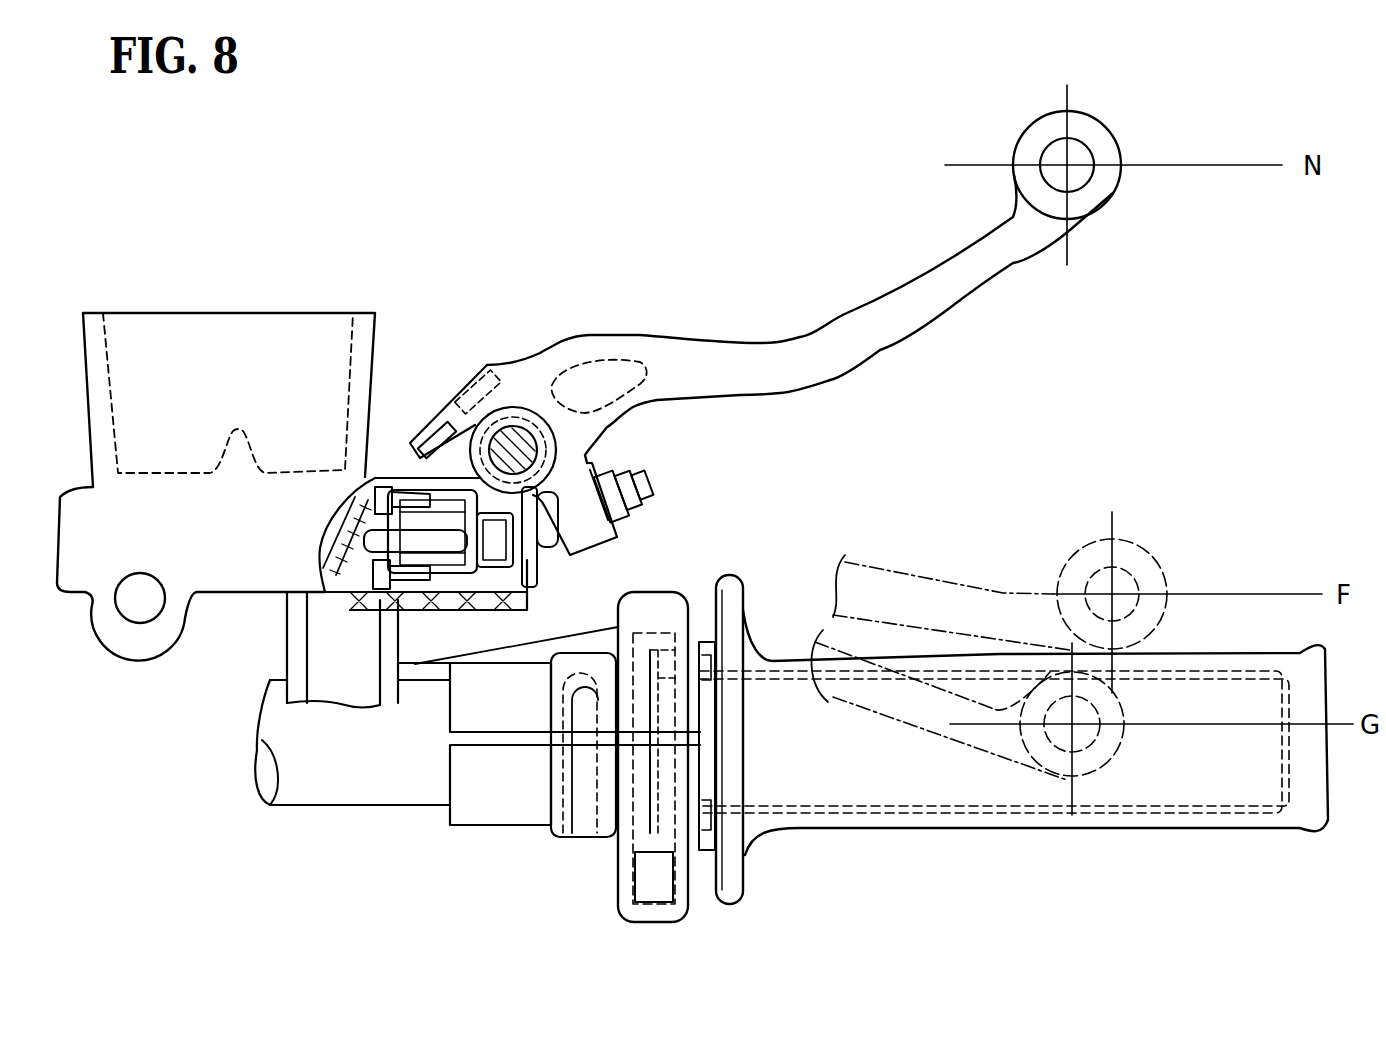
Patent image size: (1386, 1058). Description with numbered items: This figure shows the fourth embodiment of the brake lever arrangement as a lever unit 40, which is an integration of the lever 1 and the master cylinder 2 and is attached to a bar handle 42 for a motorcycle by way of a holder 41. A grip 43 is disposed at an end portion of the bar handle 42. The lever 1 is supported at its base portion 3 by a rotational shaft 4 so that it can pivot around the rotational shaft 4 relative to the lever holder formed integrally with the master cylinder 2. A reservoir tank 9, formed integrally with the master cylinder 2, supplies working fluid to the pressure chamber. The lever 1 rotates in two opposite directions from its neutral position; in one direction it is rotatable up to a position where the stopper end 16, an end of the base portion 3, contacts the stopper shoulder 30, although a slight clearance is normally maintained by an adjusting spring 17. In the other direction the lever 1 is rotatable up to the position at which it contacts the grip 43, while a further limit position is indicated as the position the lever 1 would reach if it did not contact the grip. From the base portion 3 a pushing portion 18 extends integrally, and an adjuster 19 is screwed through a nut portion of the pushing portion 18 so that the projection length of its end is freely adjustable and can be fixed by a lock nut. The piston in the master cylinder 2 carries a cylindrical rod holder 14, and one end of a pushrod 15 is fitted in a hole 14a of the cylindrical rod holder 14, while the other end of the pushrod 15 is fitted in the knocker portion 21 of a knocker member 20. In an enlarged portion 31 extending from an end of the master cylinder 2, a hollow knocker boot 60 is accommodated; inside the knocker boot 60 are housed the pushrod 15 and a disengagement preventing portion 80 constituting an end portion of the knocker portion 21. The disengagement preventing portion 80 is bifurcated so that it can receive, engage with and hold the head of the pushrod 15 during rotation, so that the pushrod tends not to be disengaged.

The lever 1 is at (915, 295).
The master cylinder 2 is at (232, 575).
The base portion 3 is at (520, 420).
The rotational shaft 4 is at (512, 425).
The reservoir tank 9 is at (100, 393).
The cylindrical rod holder 14 is at (440, 608).
The hole 14a is at (368, 650).
The pushrod 15 is at (358, 493).
The stopper end 16 is at (482, 390).
The adjusting spring 17 is at (457, 377).
The pushing portion 18 is at (603, 537).
The adjuster 19 is at (655, 480).
The knocker member 20 is at (550, 548).
The knocker portion 21 is at (540, 565).
The stopper shoulder 30 is at (443, 410).
The enlarged portion 31 is at (470, 600).
The lever unit 40 is at (131, 658).
The holder 41 is at (288, 652).
The bar handle 42 is at (304, 800).
The grip 43 is at (873, 828).
The knocker boot 60 is at (413, 467).
The disengagement preventing portion 80 is at (520, 600).